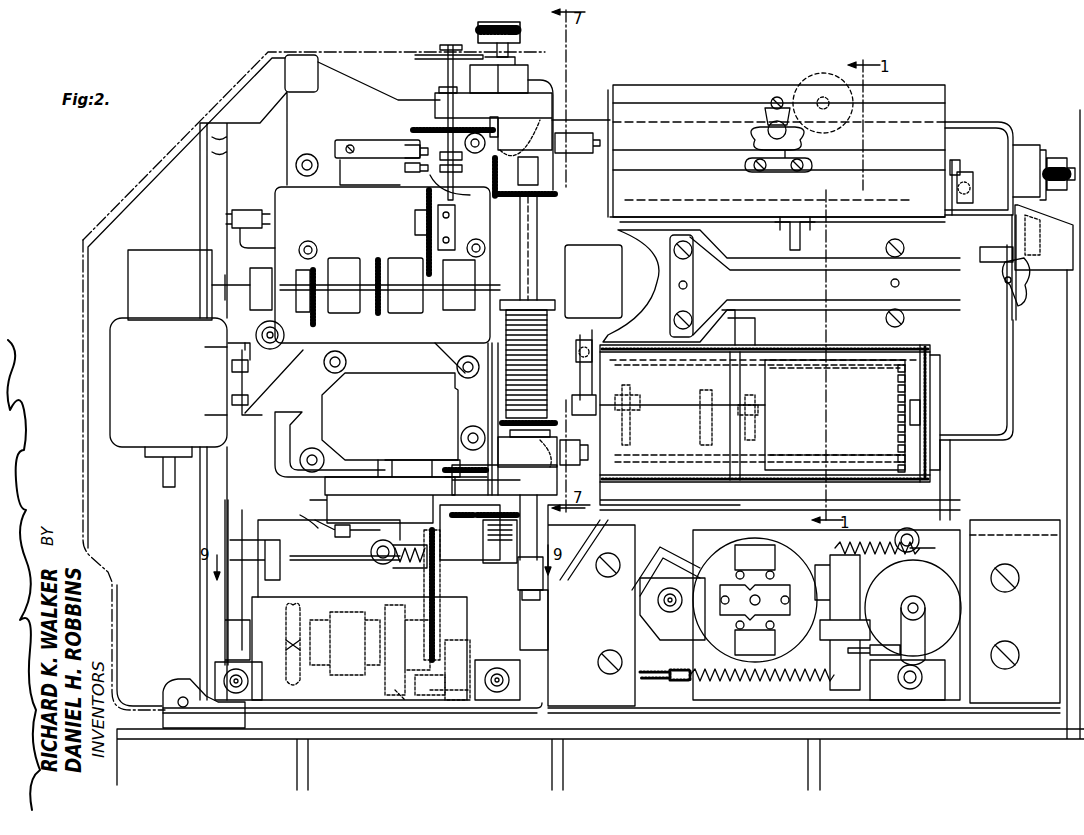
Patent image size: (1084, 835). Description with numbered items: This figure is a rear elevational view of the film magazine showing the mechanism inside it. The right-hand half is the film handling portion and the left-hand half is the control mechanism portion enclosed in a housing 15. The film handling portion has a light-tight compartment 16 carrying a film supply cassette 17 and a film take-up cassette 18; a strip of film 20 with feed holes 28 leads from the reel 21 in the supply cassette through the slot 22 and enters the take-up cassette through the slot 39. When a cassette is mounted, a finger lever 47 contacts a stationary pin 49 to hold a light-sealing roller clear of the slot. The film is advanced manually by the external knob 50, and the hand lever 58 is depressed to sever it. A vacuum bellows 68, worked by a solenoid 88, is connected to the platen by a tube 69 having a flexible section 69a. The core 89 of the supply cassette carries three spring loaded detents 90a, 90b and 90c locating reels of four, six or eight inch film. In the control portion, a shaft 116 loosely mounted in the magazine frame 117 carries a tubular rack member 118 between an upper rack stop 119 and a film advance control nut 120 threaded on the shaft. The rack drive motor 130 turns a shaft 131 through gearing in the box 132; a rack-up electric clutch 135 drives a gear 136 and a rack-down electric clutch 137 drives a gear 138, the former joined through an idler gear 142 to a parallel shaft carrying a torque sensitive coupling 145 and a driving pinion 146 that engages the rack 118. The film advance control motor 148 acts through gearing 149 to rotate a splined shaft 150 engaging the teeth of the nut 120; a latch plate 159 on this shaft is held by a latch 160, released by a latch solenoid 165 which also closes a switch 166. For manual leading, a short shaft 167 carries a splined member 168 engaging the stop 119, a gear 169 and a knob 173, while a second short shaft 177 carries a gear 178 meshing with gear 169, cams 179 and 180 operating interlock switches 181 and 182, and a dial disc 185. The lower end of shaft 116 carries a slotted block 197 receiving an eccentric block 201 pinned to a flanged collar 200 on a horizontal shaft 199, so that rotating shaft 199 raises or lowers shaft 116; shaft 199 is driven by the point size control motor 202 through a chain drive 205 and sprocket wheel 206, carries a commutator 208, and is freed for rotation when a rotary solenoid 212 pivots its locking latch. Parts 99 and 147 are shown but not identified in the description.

The housing 15 is at (140, 180).
The light-tight compartment 16 is at (998, 356).
The film supply cassette 17 is at (930, 440).
The film take-up cassette 18 is at (918, 90).
The strip of film 20 is at (852, 372).
The reel 21 is at (830, 375).
The slot 22 is at (775, 352).
The feed holes 28 is at (897, 420).
The slot 39 is at (720, 200).
The finger lever 47 is at (578, 350).
The stationary pin 49 is at (578, 362).
The external knob 50 is at (1048, 158).
The hand lever 58 is at (1055, 262).
The vacuum bellows 68 is at (757, 552).
The tube 69 is at (667, 555).
The flexible section 69a is at (613, 499).
The solenoid 88 is at (950, 605).
The core 89 is at (745, 445).
The spring loaded detent 90a is at (755, 430).
The spring loaded detent 90b is at (712, 415).
The spring loaded detent 90c is at (635, 425).
The roller 99 is at (817, 78).
The shaft 116 is at (505, 237).
The magazine frame 117 is at (540, 105).
The tubular rack member 118 is at (540, 300).
The upper rack stop 119 is at (545, 197).
The film advance control nut 120 is at (525, 410).
The rack drive motor 130 is at (133, 435).
The shaft 131 is at (246, 290).
The box 132 is at (160, 258).
The rack-up electric clutch 135 is at (345, 268).
The gear 136 is at (318, 268).
The rack-down electric clutch 137 is at (398, 268).
The gear 138 is at (378, 316).
The idler gear 142 is at (318, 318).
The torque sensitive coupling 145 is at (455, 312).
The driving pinion 146 is at (520, 270).
The bracket 147 is at (415, 222).
The film advance control motor 148 is at (410, 409).
The gearing 149 is at (465, 478).
The splined shaft 150 is at (500, 398).
The latch plate 159 is at (500, 500).
The latch 160 is at (465, 525).
The latch solenoid 165 is at (422, 500).
The switch 166 is at (340, 525).
The short shaft 167 is at (515, 63).
The splined member 168 is at (525, 172).
The gear 169 is at (490, 120).
The knob 173 is at (480, 33).
The second short shaft 177 is at (447, 78).
The gear 178 is at (413, 128).
The cam 179 is at (470, 155).
The cam 180 is at (445, 180).
The interlock switch 181 is at (400, 145).
The interlock switch 182 is at (405, 170).
The disc 185 is at (415, 63).
The slotted block 197 is at (545, 590).
The horizontal shaft 199 is at (312, 558).
The flanged collar 200 is at (501, 541).
The eccentric block 201 is at (522, 575).
The point size control motor 202 is at (345, 682).
The chain drive 205 is at (430, 540).
The sprocket wheel 206 is at (445, 672).
The commutator 208 is at (245, 583).
The rotary solenoid 212 is at (518, 640).